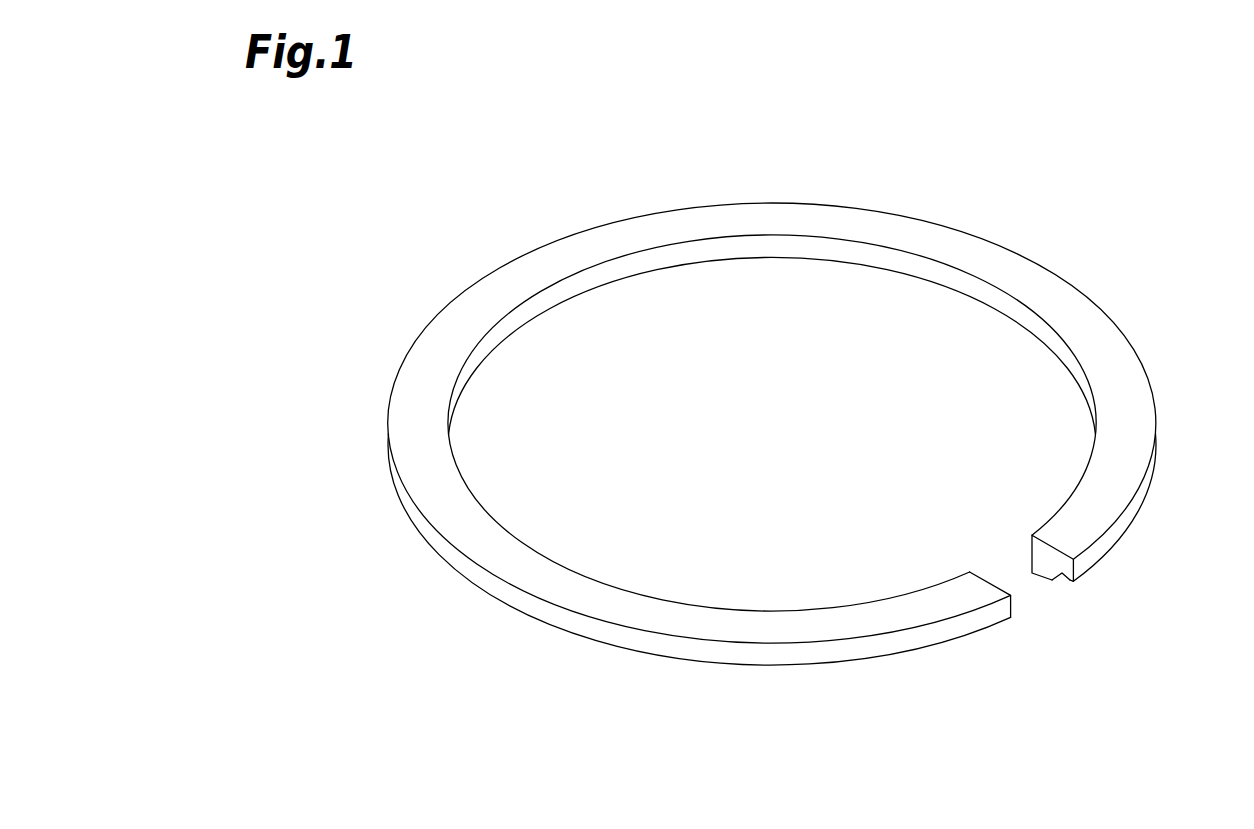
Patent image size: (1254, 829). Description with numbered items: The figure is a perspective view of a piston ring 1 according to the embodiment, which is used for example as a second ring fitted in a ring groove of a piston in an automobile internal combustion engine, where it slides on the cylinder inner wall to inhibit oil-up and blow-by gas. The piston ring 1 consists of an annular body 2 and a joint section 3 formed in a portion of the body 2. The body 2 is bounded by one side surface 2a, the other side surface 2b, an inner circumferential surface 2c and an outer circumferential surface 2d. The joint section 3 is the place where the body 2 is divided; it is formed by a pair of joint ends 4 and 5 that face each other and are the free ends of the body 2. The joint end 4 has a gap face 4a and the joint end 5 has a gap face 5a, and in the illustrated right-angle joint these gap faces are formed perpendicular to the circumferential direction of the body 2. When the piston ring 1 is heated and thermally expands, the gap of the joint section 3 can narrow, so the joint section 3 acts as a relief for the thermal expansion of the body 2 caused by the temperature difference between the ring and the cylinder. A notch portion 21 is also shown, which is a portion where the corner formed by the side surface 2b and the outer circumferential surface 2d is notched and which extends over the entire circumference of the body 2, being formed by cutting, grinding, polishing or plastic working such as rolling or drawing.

The piston ring 1 is at (804, 488).
The body 2 is at (804, 462).
The side surface 2a is at (1132, 363).
The side surface 2b is at (1040, 578).
The inner circumferential surface 2c is at (758, 250).
The outer circumferential surface 2d is at (593, 628).
The joint section 3 is at (1038, 623).
The joint end 4 is at (994, 626).
The gap face 4a is at (1000, 588).
The joint end 5 is at (1070, 603).
The gap face 5a is at (1045, 558).
The notch portion 21 is at (1064, 579).